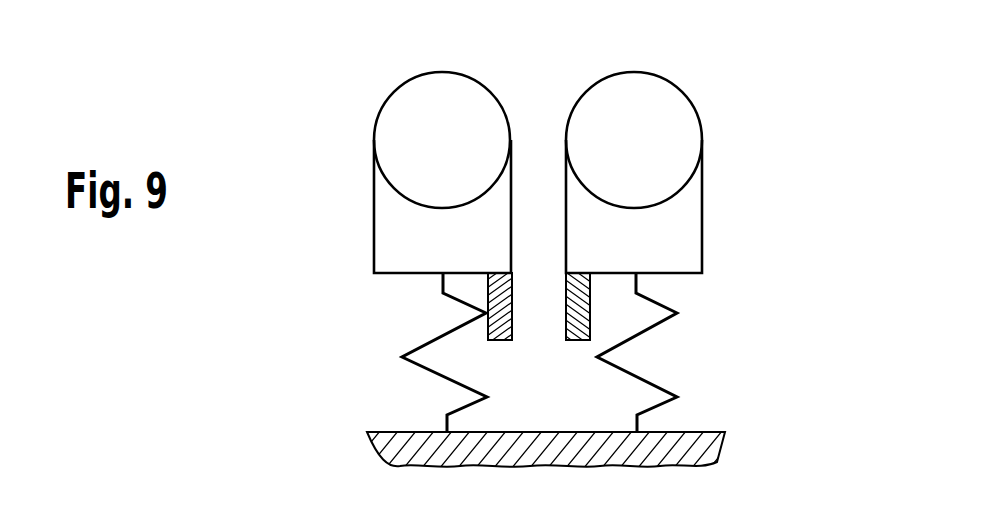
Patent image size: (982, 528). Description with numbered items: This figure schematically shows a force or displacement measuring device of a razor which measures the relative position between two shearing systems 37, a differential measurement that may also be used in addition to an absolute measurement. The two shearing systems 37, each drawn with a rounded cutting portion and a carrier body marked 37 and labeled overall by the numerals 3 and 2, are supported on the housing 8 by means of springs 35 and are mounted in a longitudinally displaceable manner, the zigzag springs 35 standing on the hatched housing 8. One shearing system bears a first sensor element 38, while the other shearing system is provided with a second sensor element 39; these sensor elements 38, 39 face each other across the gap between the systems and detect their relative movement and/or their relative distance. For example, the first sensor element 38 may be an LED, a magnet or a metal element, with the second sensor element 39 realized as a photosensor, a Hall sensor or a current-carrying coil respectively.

The contact element 2 is at (673, 83).
The contact element 3 is at (470, 78).
The housing 8 is at (687, 450).
The springs 35 is at (443, 377).
The shearing systems 37 is at (456, 252).
The first sensor element 38 is at (610, 311).
The second sensor element 39 is at (532, 344).